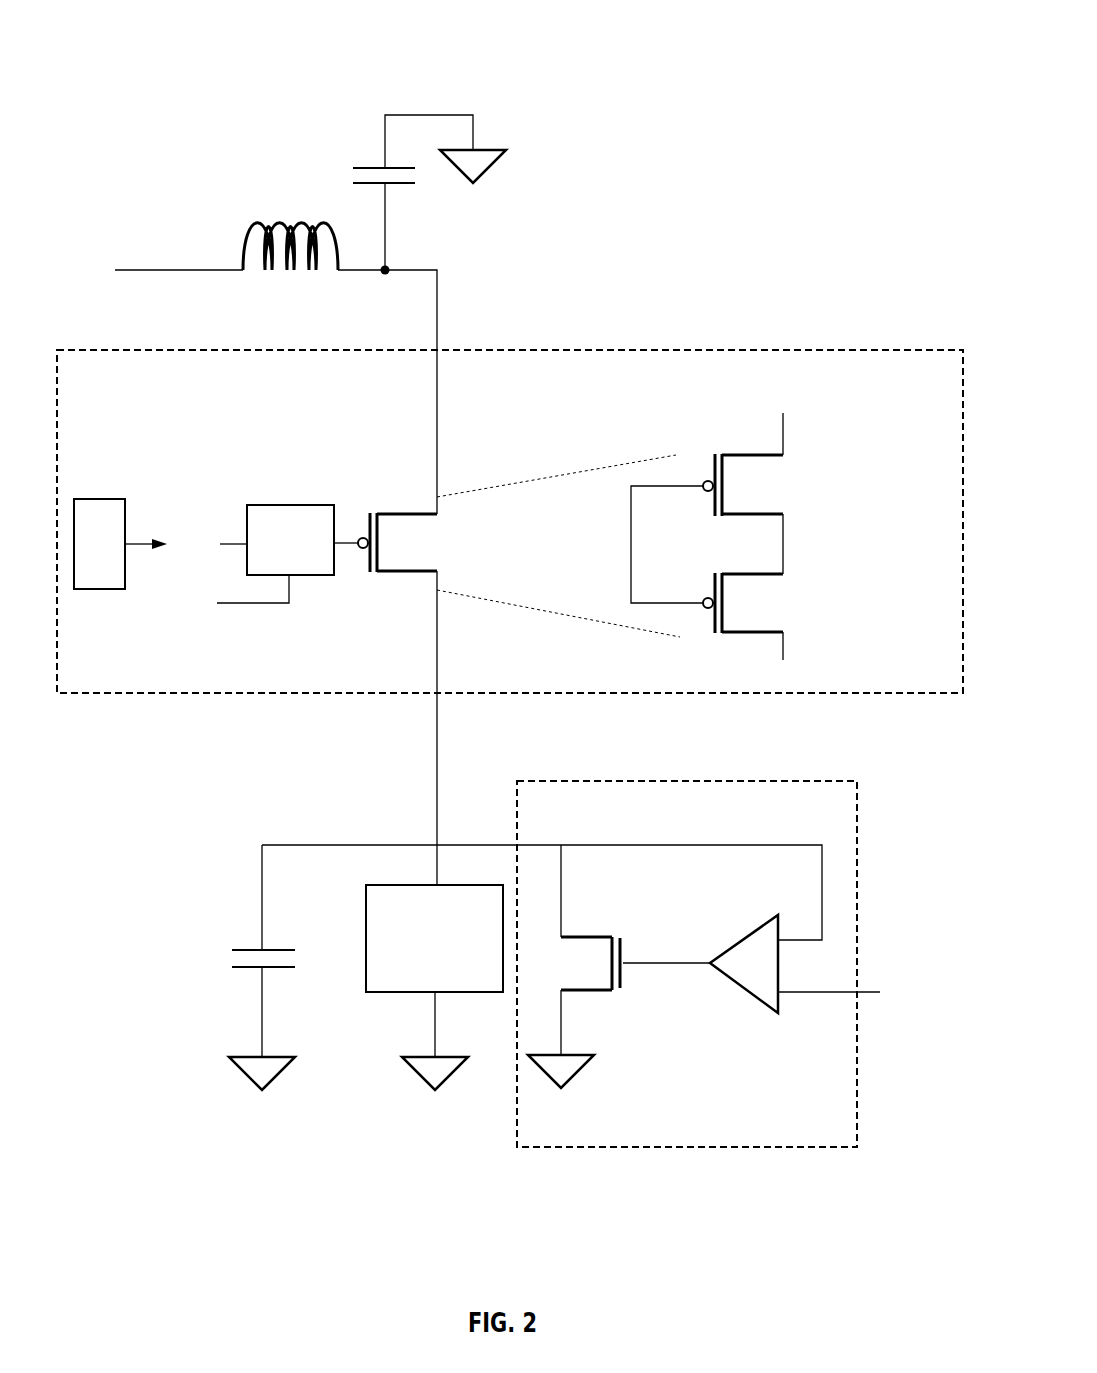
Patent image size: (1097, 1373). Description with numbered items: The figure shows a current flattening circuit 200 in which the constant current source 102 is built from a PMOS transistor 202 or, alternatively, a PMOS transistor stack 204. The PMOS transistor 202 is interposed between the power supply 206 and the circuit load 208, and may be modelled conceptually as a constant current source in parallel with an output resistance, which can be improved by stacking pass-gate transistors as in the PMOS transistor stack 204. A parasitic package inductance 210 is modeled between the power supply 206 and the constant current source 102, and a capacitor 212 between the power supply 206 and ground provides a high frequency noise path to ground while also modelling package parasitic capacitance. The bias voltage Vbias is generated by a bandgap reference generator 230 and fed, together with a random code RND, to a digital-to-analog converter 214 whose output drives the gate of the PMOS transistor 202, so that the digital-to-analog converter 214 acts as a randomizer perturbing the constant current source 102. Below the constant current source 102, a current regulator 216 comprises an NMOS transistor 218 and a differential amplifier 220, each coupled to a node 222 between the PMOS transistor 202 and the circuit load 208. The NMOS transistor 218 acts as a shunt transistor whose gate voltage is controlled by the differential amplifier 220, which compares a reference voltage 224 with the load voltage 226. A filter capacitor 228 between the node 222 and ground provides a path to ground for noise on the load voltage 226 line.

The current flattening circuit 200 is at (889, 74).
The power supply 206 is at (97, 247).
The package inductance 210 is at (250, 222).
The capacitor 212 is at (355, 168).
The constant current source 102 is at (717, 353).
The PMOS transistor 202 is at (370, 510).
The digital-to-analog converter 214 is at (305, 554).
The bandgap reference generator 230 is at (114, 555).
The PMOS transistor stack 204 is at (717, 454).
The node 222 is at (442, 845).
The load voltage 226 is at (402, 840).
The circuit load 208 is at (380, 993).
The filter capacitor 228 is at (238, 945).
The current regulator 216 is at (857, 840).
The NMOS transistor 218 is at (607, 993).
The differential amplifier 220 is at (723, 953).
The reference voltage 224 is at (974, 1006).